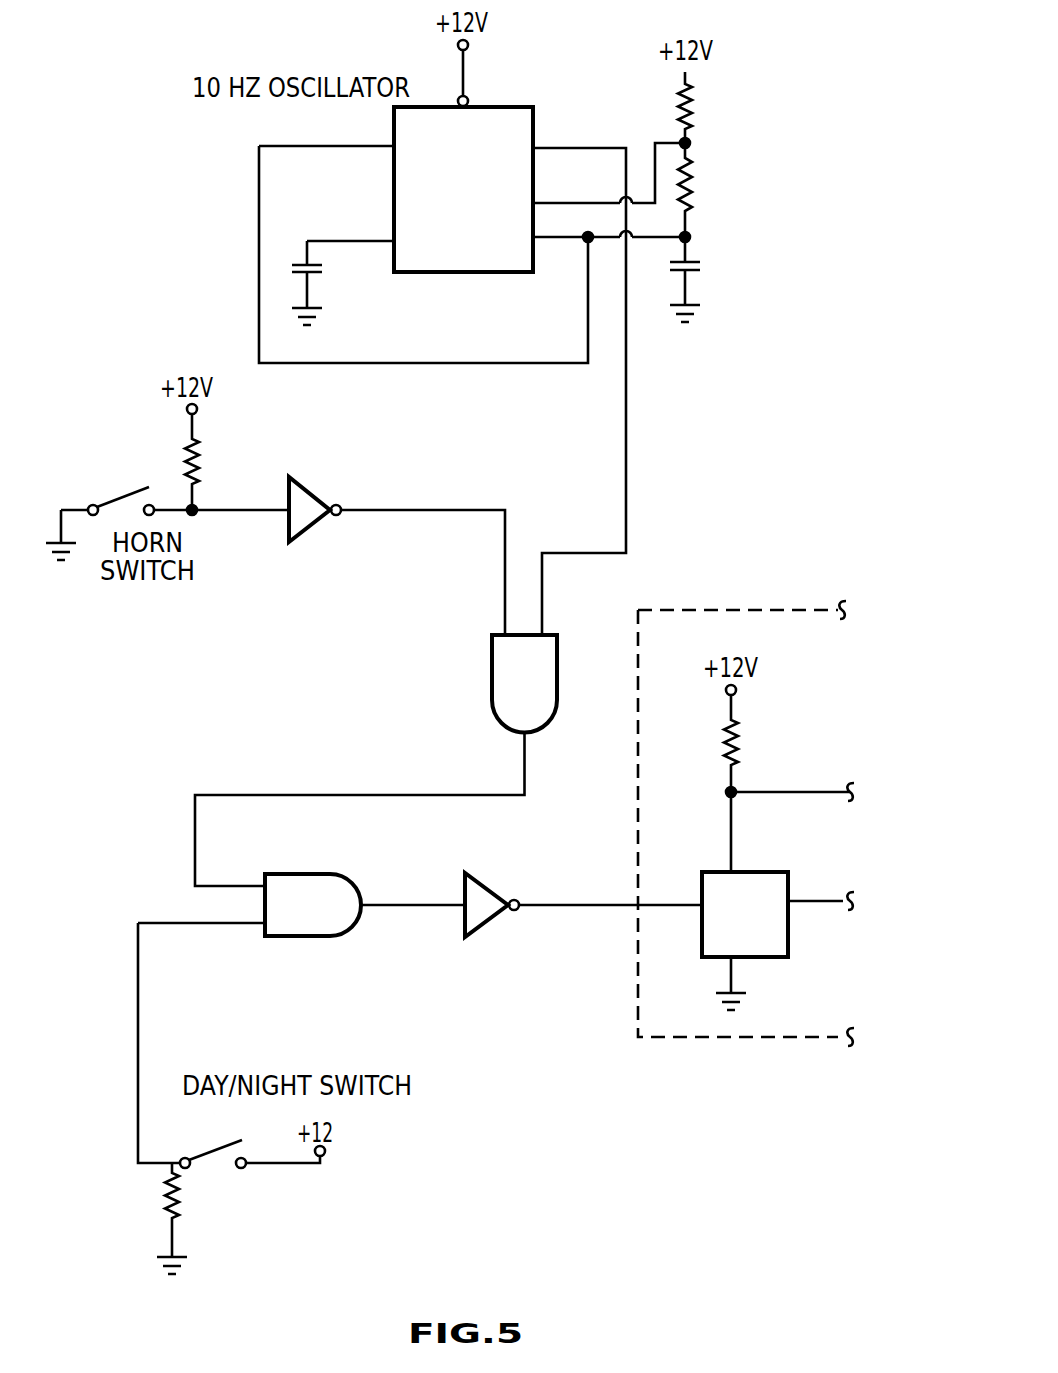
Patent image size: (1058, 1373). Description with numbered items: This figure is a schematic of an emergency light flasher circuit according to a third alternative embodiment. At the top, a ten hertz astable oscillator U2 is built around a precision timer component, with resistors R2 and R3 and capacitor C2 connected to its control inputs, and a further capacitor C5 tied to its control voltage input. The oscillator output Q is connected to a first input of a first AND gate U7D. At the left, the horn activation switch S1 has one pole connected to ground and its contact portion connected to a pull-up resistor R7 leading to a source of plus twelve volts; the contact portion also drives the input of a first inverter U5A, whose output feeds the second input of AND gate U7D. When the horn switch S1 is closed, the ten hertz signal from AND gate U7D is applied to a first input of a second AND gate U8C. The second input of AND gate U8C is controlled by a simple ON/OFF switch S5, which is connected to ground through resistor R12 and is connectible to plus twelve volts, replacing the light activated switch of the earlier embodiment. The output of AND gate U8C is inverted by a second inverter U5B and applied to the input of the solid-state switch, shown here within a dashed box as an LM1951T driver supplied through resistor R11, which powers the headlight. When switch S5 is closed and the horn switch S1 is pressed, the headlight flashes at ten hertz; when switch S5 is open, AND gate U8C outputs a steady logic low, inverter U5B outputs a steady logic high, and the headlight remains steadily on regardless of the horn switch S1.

The 10 Hz astable oscillator U2 is at (459, 213).
The capacitor .01 uF C5 is at (343, 285).
The resistor R2 is at (716, 107).
The resistor R3 is at (717, 190).
The capacitor C2 is at (724, 275).
The pull-up resistor R7 is at (208, 462).
The horn activation switch S1 is at (121, 490).
The first inverter U5A is at (318, 512).
The first AND gate U7D is at (553, 680).
The second AND gate U8C is at (316, 906).
The second inverter U5B is at (492, 903).
The resistor 10 ohm R11 is at (753, 743).
The LM1951T high-side driver LM1951T is at (788, 916).
The ON/OFF switch S5 is at (213, 1143).
The resistor R12 is at (196, 1210).